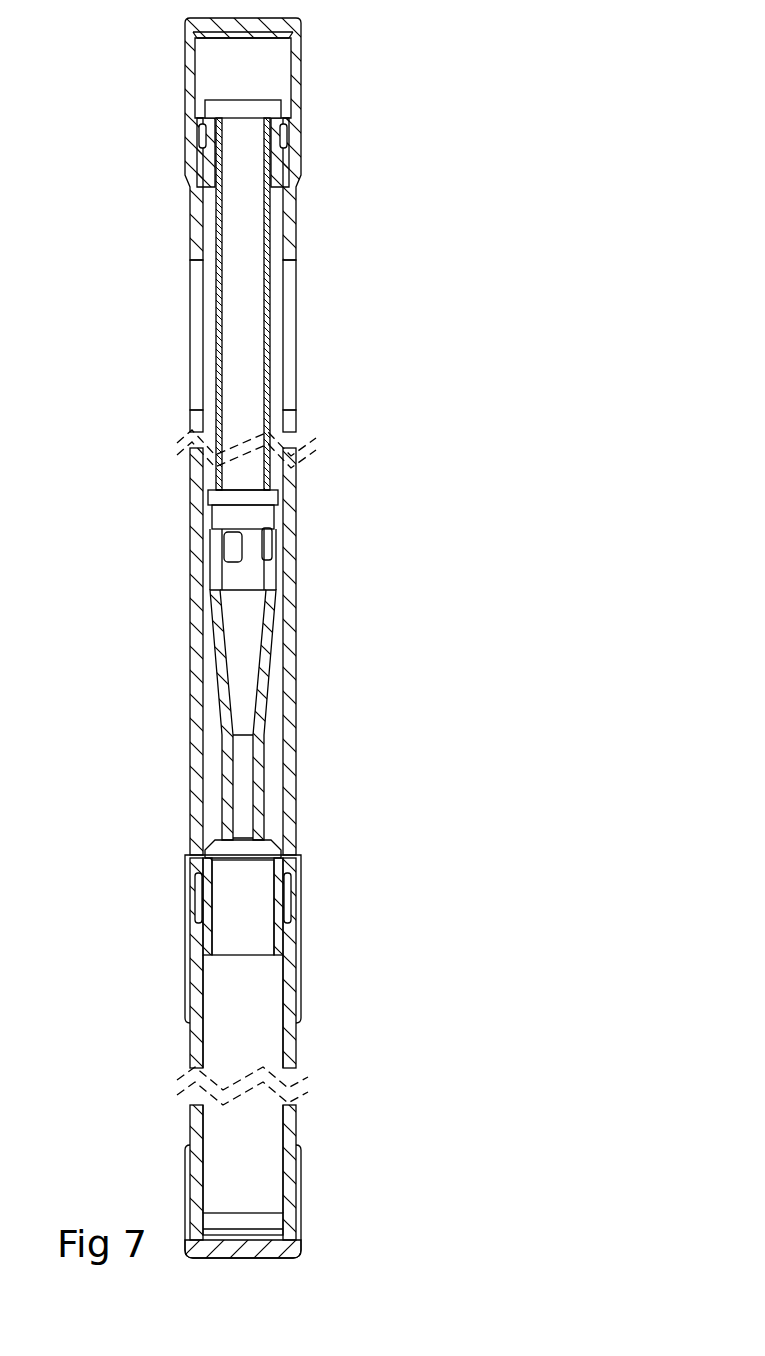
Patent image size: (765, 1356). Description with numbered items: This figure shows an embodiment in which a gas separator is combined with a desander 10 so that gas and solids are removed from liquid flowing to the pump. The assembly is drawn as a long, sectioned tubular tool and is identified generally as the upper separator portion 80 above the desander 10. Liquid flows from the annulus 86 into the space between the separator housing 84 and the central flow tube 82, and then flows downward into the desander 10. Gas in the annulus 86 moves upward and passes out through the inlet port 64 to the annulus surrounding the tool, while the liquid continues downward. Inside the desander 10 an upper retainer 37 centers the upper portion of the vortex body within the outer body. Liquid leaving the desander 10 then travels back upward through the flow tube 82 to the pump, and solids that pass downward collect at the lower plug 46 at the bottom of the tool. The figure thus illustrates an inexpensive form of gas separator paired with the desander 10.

The desander 10 is at (332, 638).
The upper sub-assembly 80 is at (329, 436).
The separator housing 84 is at (288, 235).
The inlet port 64 is at (288, 325).
The flow tube 82 is at (293, 388).
The annulus 86 is at (214, 392).
The upper retainer 37 is at (218, 694).
The lower plug 46 is at (295, 1212).